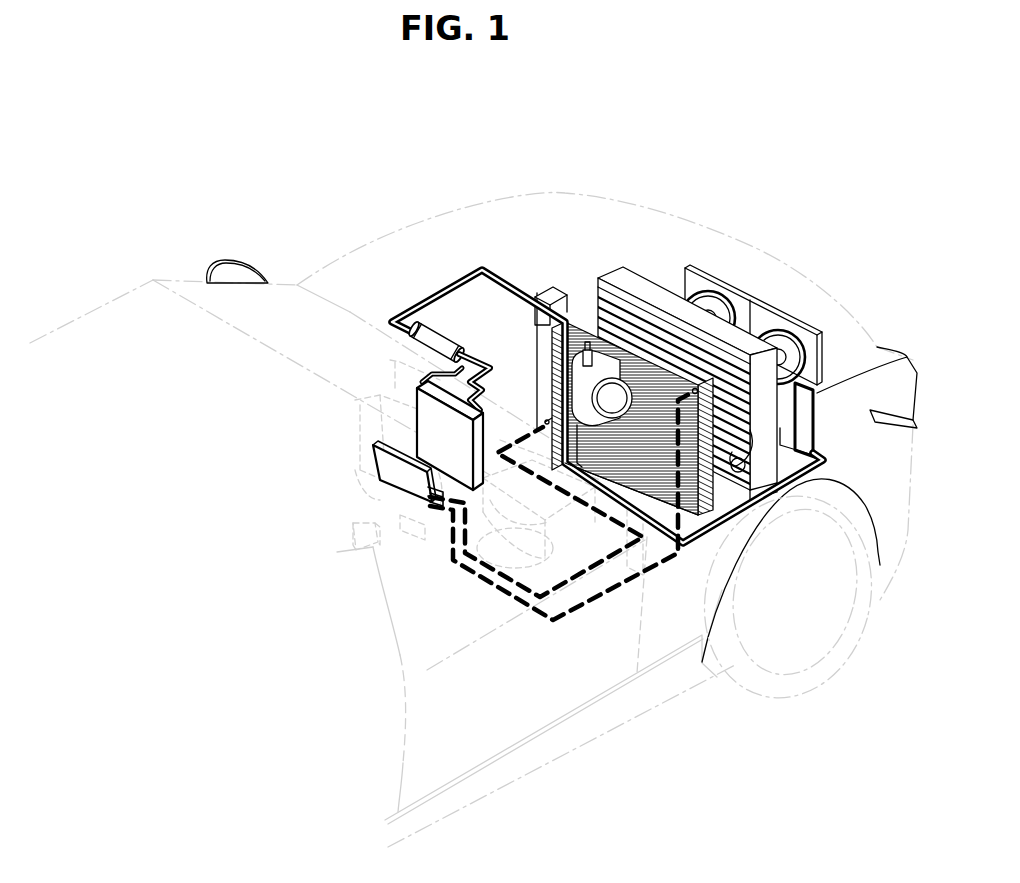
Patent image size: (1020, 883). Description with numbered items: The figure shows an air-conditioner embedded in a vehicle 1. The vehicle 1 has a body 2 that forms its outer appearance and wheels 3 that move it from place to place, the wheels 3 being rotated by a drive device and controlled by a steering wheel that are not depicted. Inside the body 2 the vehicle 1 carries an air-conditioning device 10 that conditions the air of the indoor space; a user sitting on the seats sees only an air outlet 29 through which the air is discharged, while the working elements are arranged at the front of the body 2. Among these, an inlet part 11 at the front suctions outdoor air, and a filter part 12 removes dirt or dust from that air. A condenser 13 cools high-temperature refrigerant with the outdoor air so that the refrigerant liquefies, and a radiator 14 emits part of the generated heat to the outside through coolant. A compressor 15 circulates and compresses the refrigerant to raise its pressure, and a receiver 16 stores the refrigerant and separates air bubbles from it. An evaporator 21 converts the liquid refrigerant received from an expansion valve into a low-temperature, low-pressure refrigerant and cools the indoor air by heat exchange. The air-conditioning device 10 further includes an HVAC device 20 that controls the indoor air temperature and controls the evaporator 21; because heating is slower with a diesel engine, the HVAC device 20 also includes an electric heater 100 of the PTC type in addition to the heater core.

The vehicle 1 is at (428, 127).
The body 2 is at (283, 283).
The wheels 3 is at (853, 595).
The air-conditioning device 10 is at (641, 345).
The inlet part 11 is at (705, 278).
The filter part 12 is at (793, 363).
The condenser 13 is at (612, 278).
The radiator 14 is at (546, 294).
The compressor 15 is at (580, 387).
The receiver 16 is at (436, 327).
The HVAC device 20 is at (340, 417).
The evaporator 21 is at (427, 402).
The air outlet 29 is at (340, 525).
The electric heater 100 is at (380, 457).